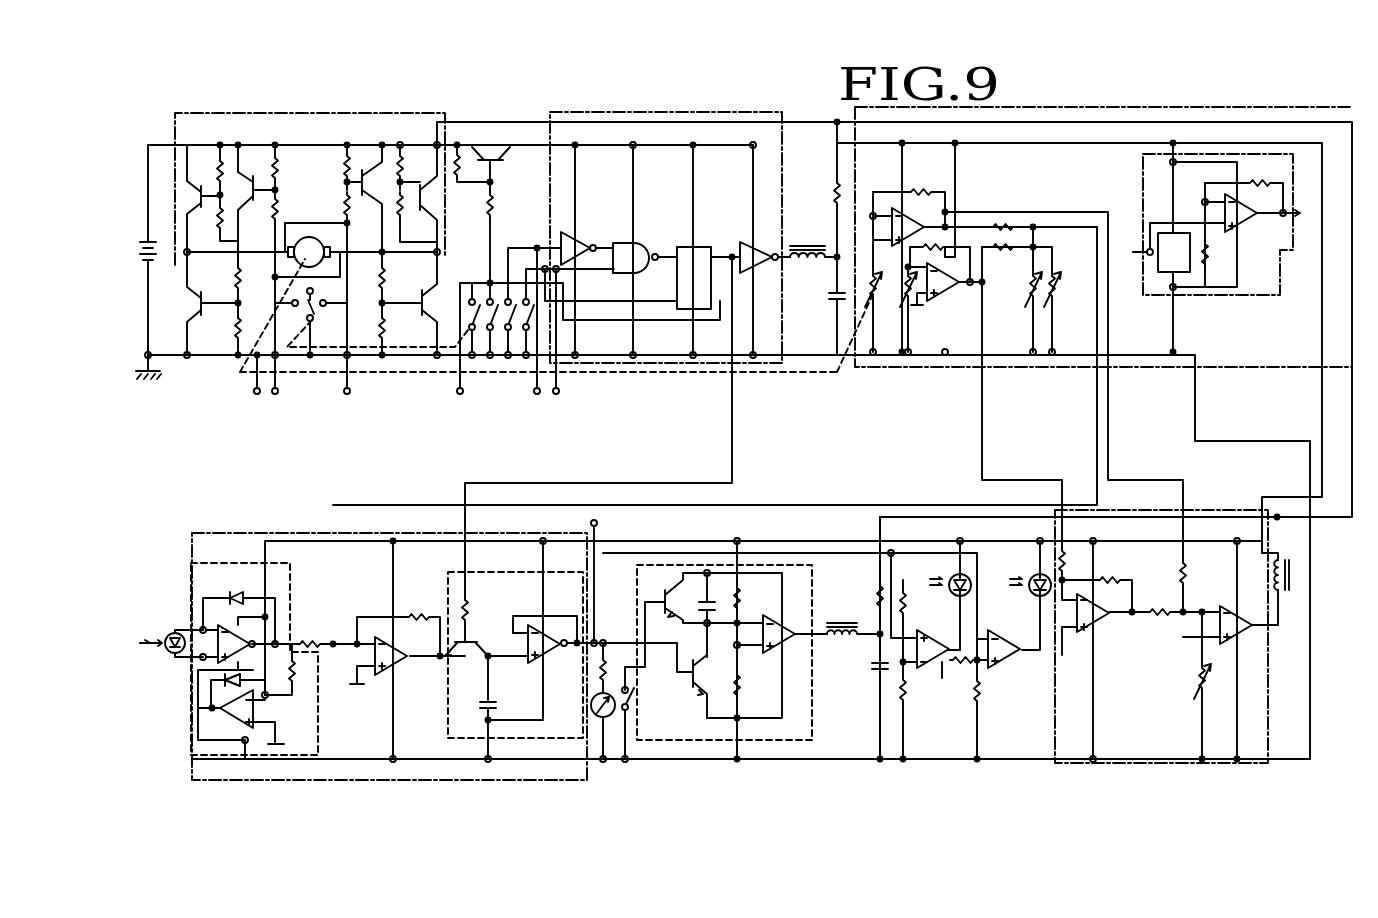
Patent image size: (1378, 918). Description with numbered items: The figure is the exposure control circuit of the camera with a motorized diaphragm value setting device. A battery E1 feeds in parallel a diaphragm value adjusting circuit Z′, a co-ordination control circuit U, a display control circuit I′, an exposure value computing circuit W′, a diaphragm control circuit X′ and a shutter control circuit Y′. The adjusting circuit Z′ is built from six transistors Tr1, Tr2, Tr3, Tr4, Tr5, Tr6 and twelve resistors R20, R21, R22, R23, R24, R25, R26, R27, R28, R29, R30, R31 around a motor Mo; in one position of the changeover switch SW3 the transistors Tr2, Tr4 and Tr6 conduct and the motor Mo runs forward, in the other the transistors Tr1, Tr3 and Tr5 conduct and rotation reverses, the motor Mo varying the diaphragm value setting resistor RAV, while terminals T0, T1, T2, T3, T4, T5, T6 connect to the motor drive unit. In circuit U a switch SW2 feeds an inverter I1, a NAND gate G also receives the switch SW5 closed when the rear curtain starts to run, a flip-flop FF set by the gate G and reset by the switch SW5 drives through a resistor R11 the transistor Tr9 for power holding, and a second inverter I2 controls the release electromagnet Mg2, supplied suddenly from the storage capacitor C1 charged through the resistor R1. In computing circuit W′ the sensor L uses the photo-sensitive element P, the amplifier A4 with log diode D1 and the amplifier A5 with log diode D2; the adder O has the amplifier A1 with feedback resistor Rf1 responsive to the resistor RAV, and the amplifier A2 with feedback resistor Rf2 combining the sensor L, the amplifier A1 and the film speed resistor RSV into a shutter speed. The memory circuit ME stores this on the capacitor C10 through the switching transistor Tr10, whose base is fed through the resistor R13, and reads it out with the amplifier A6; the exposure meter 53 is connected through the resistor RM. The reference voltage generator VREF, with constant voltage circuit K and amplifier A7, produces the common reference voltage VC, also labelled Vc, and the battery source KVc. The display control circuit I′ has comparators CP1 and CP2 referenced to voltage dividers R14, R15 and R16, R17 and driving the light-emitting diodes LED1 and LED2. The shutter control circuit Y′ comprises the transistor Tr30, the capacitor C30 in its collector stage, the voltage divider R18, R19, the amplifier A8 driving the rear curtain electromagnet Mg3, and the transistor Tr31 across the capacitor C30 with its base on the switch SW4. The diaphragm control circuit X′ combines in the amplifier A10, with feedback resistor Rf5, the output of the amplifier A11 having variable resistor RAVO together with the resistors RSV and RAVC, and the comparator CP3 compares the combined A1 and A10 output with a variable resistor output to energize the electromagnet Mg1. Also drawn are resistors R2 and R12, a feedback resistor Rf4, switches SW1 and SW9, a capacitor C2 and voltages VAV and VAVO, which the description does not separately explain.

The diaphragm value adjusting circuit Z′ is at (406, 115).
The co-ordination control circuit U is at (744, 112).
The exposure value computing circuit W′ is at (940, 367).
The diaphragm control circuit X′ is at (1145, 763).
The shutter control circuit Y′ is at (812, 722).
The memory circuit ME is at (508, 580).
The sensor L is at (207, 563).
The adder O is at (367, 591).
The reference voltage generator VREF is at (1243, 297).
The battery E1 is at (141, 262).
The transistor Tr1 is at (195, 194).
The transistor Tr2 is at (249, 198).
The transistor Tr3 is at (417, 305).
The transistor Tr4 is at (432, 217).
The transistor Tr5 is at (370, 200).
The transistor Tr6 is at (195, 303).
The transistor Tr9 is at (483, 157).
The switching transistor Tr10 is at (465, 659).
The transistor Tr30 is at (700, 691).
The transistor Tr31 is at (668, 592).
The resistor R1 is at (826, 207).
The resistor R2 is at (871, 588).
The resistor R11 is at (504, 245).
The resistor R12 is at (457, 185).
The resistor R13 is at (479, 619).
The voltage divider resistor R14 is at (915, 633).
The voltage divider resistor R15 is at (915, 719).
The voltage divider resistor R16 is at (969, 673).
The voltage divider resistor R17 is at (989, 720).
The voltage divider resistor R18 is at (750, 598).
The voltage divider resistor R19 is at (750, 702).
The resistor R20 is at (209, 169).
The resistor R21 is at (216, 217).
The resistor R22 is at (252, 272).
The resistor R23 is at (226, 329).
The resistor R24 is at (288, 167).
The resistor R25 is at (288, 288).
The resistor R26 is at (336, 167).
The resistor R27 is at (342, 284).
The resistor R28 is at (370, 284).
The resistor R29 is at (370, 329).
The resistor R30 is at (413, 166).
The resistor R31 is at (417, 217).
The feedback resistor Rf1 is at (910, 197).
The feedback resistor Rf2 is at (398, 625).
The feedback resistor Rf4 is at (950, 245).
The feedback resistor Rf5 is at (1097, 584).
The diaphragm value setting variable resistor RAV is at (885, 297).
The variable resistor RAVO is at (917, 302).
The film speed setting variable resistor RSV is at (1025, 291).
The variable resistor RAVC is at (1036, 299).
The resistor RM is at (614, 668).
The motor Mo is at (312, 249).
The switch SW1 is at (482, 300).
The switch SW2 is at (503, 298).
The changeover switch SW3 is at (322, 316).
The switch SW4 is at (633, 703).
The switch SW5 is at (528, 330).
The switch SW9 is at (462, 313).
The connection terminal T0 is at (256, 385).
The connection terminal T1 is at (275, 402).
The connection terminal T2 is at (346, 402).
The connection terminal T3 is at (459, 349).
The connection terminal T4 is at (536, 331).
The connection terminal T5 is at (556, 341).
The connection terminal T6 is at (601, 578).
The first inverter I1 is at (577, 243).
The second inverter I2 is at (757, 249).
The NAND gate G is at (645, 258).
The flip-flop FF is at (704, 247).
The electromagnet Mg1 is at (1292, 568).
The camera release control electromagnet Mg2 is at (807, 246).
The electromagnet Mg3 is at (842, 642).
The storage capacitor C1 is at (828, 320).
The capacitor C2 is at (873, 712).
The memory capacitor C10 is at (513, 650).
The capacitor C30 is at (697, 613).
The first operational amplifier A1 is at (912, 234).
The second operational amplifier A2 is at (404, 650).
The operational amplifier A4 is at (235, 636).
The operational amplifier A5 is at (240, 716).
The operational amplifier A6 is at (557, 649).
The operational amplifier A7 is at (1245, 230).
The operational amplifier A8 is at (787, 626).
The operational amplifier A10 is at (1086, 618).
The operational amplifier A11 is at (955, 300).
The constant voltage circuit K is at (1179, 247).
The common battery source voltage KVc is at (789, 464).
The common reference voltage Vc is at (874, 241).
The common reference voltage VC is at (1131, 250).
The aperture voltage VAV is at (1197, 586).
The open aperture voltage VAVO is at (1173, 625).
The photo-sensitive element P is at (175, 633).
The log diode D1 is at (239, 609).
The log diode D2 is at (212, 686).
The light-emitting diode LED1 is at (971, 580).
The light-emitting diode LED2 is at (1029, 591).
The first comparator CP1 is at (940, 647).
The second comparator CP2 is at (1010, 643).
The comparator CP3 is at (1243, 620).
The display control circuit I′ is at (947, 622).
The exposure meter 53 is at (608, 718).